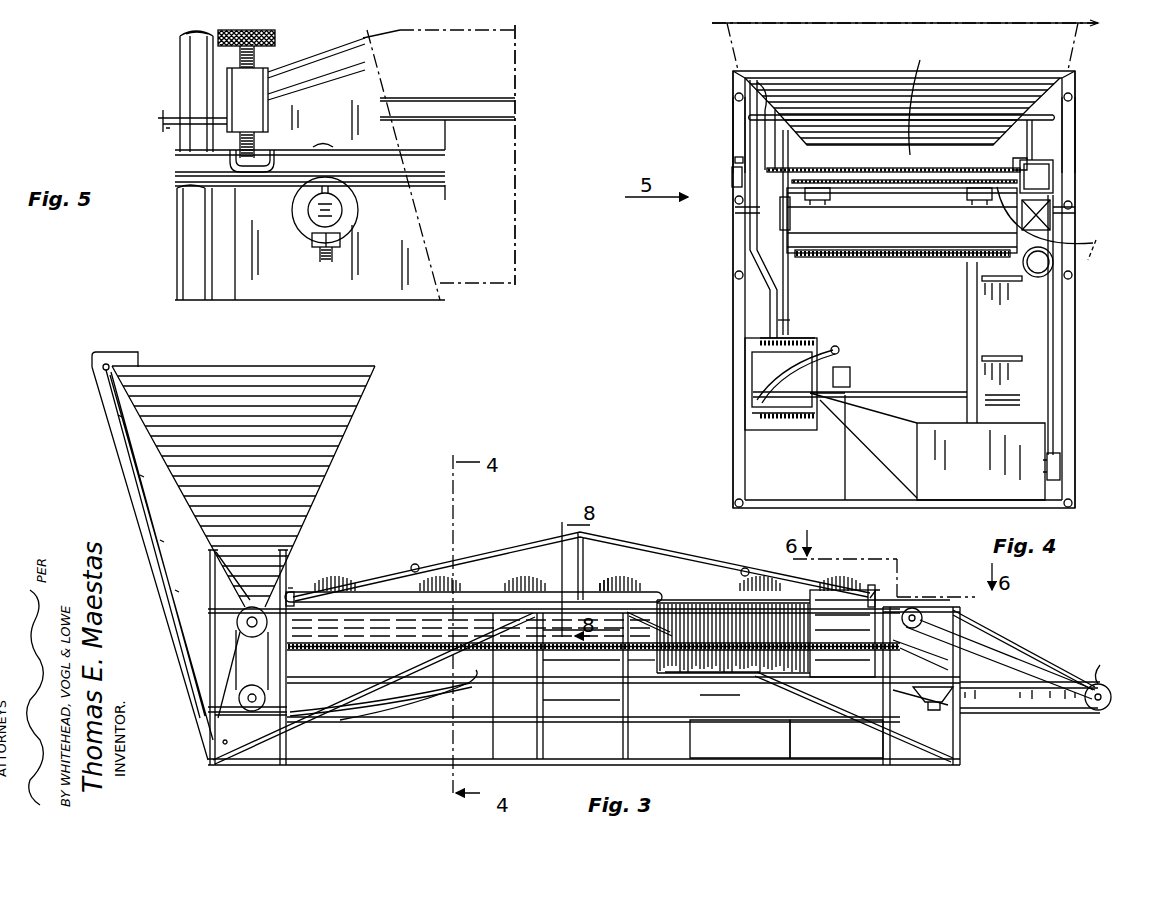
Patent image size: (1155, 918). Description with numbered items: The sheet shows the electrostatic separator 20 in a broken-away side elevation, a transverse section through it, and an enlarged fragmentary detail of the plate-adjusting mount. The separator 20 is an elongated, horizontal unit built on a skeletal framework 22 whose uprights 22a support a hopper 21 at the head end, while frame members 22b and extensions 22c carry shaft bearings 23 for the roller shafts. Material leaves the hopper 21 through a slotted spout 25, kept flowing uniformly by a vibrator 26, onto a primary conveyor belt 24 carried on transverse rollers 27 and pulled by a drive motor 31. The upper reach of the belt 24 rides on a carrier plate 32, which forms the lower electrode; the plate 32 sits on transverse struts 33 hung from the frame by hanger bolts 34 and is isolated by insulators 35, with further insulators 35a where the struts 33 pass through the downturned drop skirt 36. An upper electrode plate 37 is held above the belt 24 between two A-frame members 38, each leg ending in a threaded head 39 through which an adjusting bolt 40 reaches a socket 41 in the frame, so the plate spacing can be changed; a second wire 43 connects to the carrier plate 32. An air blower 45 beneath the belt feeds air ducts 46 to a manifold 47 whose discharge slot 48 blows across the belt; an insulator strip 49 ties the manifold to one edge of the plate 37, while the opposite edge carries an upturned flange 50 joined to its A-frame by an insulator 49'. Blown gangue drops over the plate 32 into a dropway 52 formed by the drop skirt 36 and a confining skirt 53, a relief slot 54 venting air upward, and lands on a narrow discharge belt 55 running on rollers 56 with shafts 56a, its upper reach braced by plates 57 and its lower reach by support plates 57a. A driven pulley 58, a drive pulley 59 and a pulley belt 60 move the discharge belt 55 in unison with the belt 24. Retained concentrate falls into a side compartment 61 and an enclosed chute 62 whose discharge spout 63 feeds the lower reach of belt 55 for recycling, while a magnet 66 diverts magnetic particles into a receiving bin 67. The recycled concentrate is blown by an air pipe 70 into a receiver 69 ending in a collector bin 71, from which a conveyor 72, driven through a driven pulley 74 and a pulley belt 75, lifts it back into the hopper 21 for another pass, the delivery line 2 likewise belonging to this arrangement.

In FIG. 3, the delivery conveyor 2 is at (1000, 659).
In FIG. 4, the electrostatic separator 20 is at (693, 80).
In FIG. 3, the electrostatic separator 20 is at (411, 472).
In FIG. 4, the hopper 21 is at (905, 34).
In FIG. 3, the hopper 21 is at (302, 486).
In FIG. 5, the skeletal framework 22 is at (193, 92).
In FIG. 4, the skeletal framework 22 is at (733, 304).
In FIG. 3, the skeletal framework 22 is at (405, 766).
In FIG. 4, the uprights 22a is at (894, 68).
In FIG. 3, the uprights 22a is at (276, 550).
In FIG. 3, the frame members 22b is at (262, 590).
In FIG. 3, the extensions 22c is at (1052, 700).
In FIG. 4, the shaft bearings 23 is at (850, 384).
In FIG. 3, the shaft bearings 23 is at (242, 629).
In FIG. 5, the primary conveyor belt 24 is at (160, 112).
In FIG. 4, the primary conveyor belt 24 is at (983, 164).
In FIG. 3, the primary conveyor belt 24 is at (262, 660).
In FIG. 4, the spout 25 is at (920, 60).
In FIG. 3, the spout 25 is at (290, 585).
In FIG. 3, the vibrator 26 is at (212, 578).
In FIG. 4, the transverse rollers 27 is at (935, 258).
In FIG. 3, the transverse rollers 27 is at (238, 626).
In FIG. 3, the drive motor 31 is at (738, 699).
In FIG. 4, the carrier plate 32 is at (862, 178).
In FIG. 5, the struts 33 is at (333, 212).
In FIG. 4, the struts 33 is at (913, 214).
In FIG. 5, the hanger bolt 34 is at (316, 244).
In FIG. 4, the hanger bolt 34 is at (735, 222).
In FIG. 4, the insulators 35 is at (828, 194).
In FIG. 4, the insulators 35a is at (790, 222).
In FIG. 5, the drop skirt 36 is at (503, 208).
In FIG. 4, the drop skirt 36 is at (788, 292).
In FIG. 3, the drop skirt 36 is at (722, 660).
In FIG. 4, the upper electrode plate 37 is at (951, 166).
In FIG. 5, the A-frame members 38 is at (316, 76).
In FIG. 4, the A-frame members 38 is at (745, 125).
In FIG. 3, the A-frame members 38 is at (549, 538).
In FIG. 5, the threaded head 39 is at (247, 100).
In FIG. 4, the threaded head 39 is at (732, 182).
In FIG. 3, the threaded head 39 is at (292, 598).
In FIG. 5, the adjusting bolt 40 is at (270, 48).
In FIG. 4, the adjusting bolt 40 is at (733, 156).
In FIG. 5, the socket 41 is at (260, 150).
In FIG. 4, the second wire 43 is at (1090, 232).
In FIG. 3, the air blower 45 is at (672, 741).
In FIG. 4, the air duct 46 is at (1052, 256).
In FIG. 4, the manifold 47 is at (1040, 160).
In FIG. 4, the discharge slot 48 is at (1053, 172).
In FIG. 4, the insulator strip 49 is at (1058, 139).
In FIG. 4, the insulator 49' is at (733, 95).
In FIG. 3, the insulator 49' is at (582, 559).
In FIG. 5, the upturned flange 50 is at (503, 68).
In FIG. 3, the upturned flange 50 is at (630, 568).
In FIG. 4, the dropway 52 is at (790, 318).
In FIG. 3, the dropway 52 is at (688, 672).
In FIG. 5, the confining skirt 53 is at (410, 262).
In FIG. 4, the confining skirt 53 is at (750, 262).
In FIG. 3, the confining skirt 53 is at (590, 672).
In FIG. 4, the relief slot 54 is at (766, 160).
In FIG. 4, the discharge belt 55 is at (800, 338).
In FIG. 3, the discharge belt 55 is at (470, 705).
In FIG. 4, the rollers 56 is at (850, 362).
In FIG. 3, the rollers 56 is at (238, 698).
In FIG. 3, the shafts 56a is at (1109, 665).
In FIG. 4, the plates 57 is at (745, 343).
In FIG. 3, the plates 57 is at (662, 683).
In FIG. 4, the support plates 57a is at (780, 425).
In FIG. 3, the support plates 57a is at (620, 725).
In FIG. 3, the driven pulley 58 is at (1110, 694).
In FIG. 3, the drive pulley 59 is at (922, 620).
In FIG. 3, the pulley belt 60 is at (1015, 645).
In FIG. 3, the side compartment 61 is at (940, 632).
In FIG. 3, the enclosed chute 62 is at (935, 670).
In FIG. 3, the discharge spout 63 is at (944, 712).
In FIG. 3, the magnet 66 is at (926, 570).
In FIG. 3, the receiving bin 67 is at (836, 739).
In FIG. 4, the receiver 69 is at (855, 425).
In FIG. 3, the receiver 69 is at (315, 735).
In FIG. 4, the air pipe 70 is at (842, 352).
In FIG. 3, the air pipe 70 is at (385, 706).
In FIG. 4, the collector bin 71 is at (927, 446).
In FIG. 3, the collector bin 71 is at (215, 738).
In FIG. 4, the conveyor 72 is at (982, 352).
In FIG. 3, the conveyor 72 is at (130, 485).
In FIG. 4, the driven pulley 74 is at (1060, 462).
In FIG. 4, the pulley belt 75 is at (1053, 398).
In FIG. 3, the pulley belt 75 is at (222, 660).